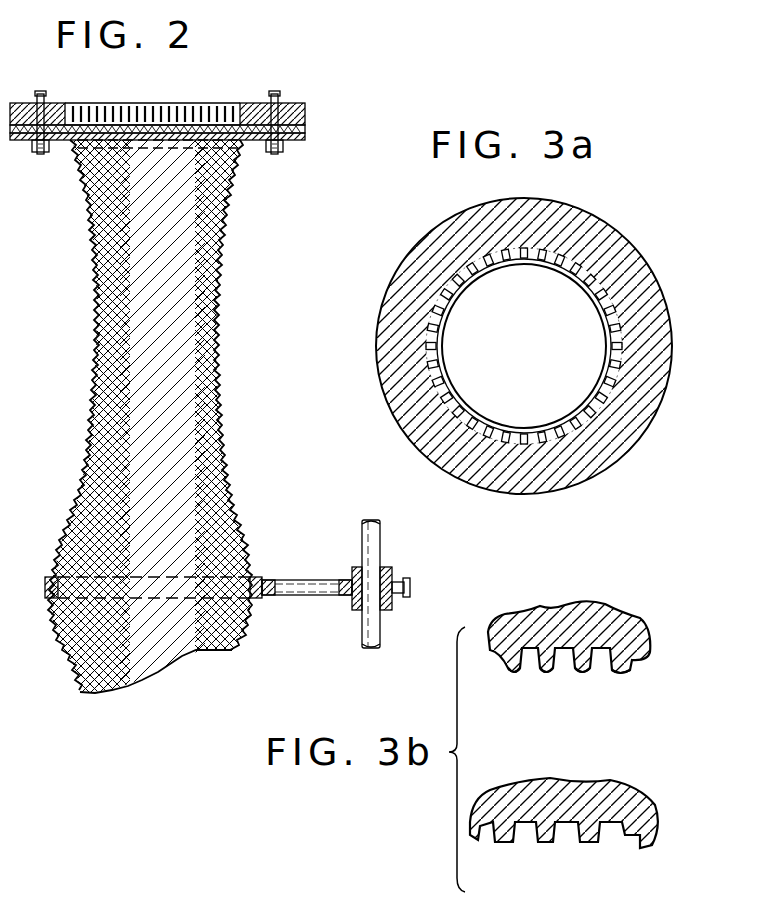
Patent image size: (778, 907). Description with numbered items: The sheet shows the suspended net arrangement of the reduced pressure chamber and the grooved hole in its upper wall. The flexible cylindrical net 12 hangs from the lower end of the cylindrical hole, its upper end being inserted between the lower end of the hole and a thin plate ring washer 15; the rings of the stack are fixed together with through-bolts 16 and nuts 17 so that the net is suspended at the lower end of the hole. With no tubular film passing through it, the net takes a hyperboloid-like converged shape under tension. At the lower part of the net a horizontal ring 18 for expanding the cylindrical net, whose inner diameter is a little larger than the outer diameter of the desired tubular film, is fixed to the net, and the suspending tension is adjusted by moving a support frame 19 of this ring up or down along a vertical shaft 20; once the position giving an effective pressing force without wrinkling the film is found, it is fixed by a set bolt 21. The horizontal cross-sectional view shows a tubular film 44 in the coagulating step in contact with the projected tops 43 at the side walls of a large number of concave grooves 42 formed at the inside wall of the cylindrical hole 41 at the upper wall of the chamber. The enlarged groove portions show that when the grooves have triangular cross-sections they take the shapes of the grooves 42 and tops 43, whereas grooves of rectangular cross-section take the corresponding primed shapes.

In FIG. 2, the flexible cylindrical net 12 is at (95, 343).
In FIG. 2, the thin plate ring washer 15 is at (305, 140).
In FIG. 2, the through-bolt 16 is at (283, 154).
In FIG. 2, the nut 17 is at (284, 150).
In FIG. 2, the horizontal ring for expanding the cylindrical net 18 is at (255, 577).
In FIG. 2, the support frame 19 is at (352, 571).
In FIG. 2, the vertical shaft 20 is at (380, 546).
In FIG. 2, the set bolt 21 is at (400, 585).
In FIG. 3a, the cylindrical hole 41 is at (617, 255).
In FIG. 3b, the cylindrical hole 41 is at (550, 612).
In FIG. 3a, the concave groove 42 is at (604, 303).
In FIG. 3b, the concave groove 42 is at (526, 660).
In FIG. 3a, the projected top 43 is at (603, 318).
In FIG. 3b, the projected top 43 is at (547, 673).
In FIG. 3a, the tubular film 44 is at (562, 265).